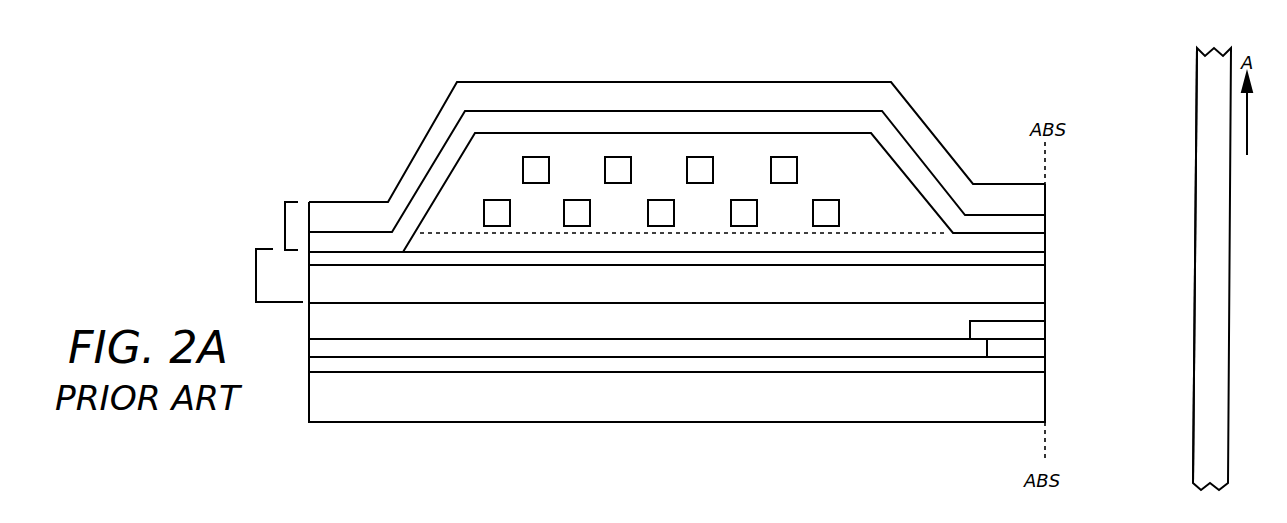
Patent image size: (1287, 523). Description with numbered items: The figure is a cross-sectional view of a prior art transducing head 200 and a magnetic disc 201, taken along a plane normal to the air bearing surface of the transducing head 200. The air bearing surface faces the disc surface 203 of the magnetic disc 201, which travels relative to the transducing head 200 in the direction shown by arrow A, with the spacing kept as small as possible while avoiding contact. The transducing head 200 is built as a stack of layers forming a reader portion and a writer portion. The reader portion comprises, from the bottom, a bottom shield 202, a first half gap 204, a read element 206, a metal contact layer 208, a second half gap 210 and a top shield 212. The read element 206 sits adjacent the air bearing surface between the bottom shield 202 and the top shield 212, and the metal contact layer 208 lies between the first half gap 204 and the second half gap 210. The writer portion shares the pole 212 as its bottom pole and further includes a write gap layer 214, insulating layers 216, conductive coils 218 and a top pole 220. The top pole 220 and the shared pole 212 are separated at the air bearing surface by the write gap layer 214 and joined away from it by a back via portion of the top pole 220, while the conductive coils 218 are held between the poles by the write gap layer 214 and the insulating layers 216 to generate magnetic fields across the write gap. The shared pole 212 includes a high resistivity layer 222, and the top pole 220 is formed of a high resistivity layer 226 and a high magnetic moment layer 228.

The transducing head 200 is at (387, 113).
The magnetic disc 201 is at (1210, 127).
The bottom shield 202 is at (1031, 408).
The disc surface 203 is at (1195, 212).
The first half gap 204 is at (1022, 368).
The read element 206 is at (1023, 347).
The metal contact layer 208 is at (1020, 331).
The second half gap 210 is at (953, 333).
The top shield / bottom pole (shared pole) 212 is at (256, 275).
The write gap layer 214 is at (1018, 247).
The insulating layers 216 is at (906, 221).
The conductive coils 218 is at (780, 173).
The top pole 220 is at (285, 225).
The high resistivity layer 222 is at (1031, 298).
The high resistivity layer 226 is at (1032, 209).
The high magnetic moment layer 228 is at (1018, 224).